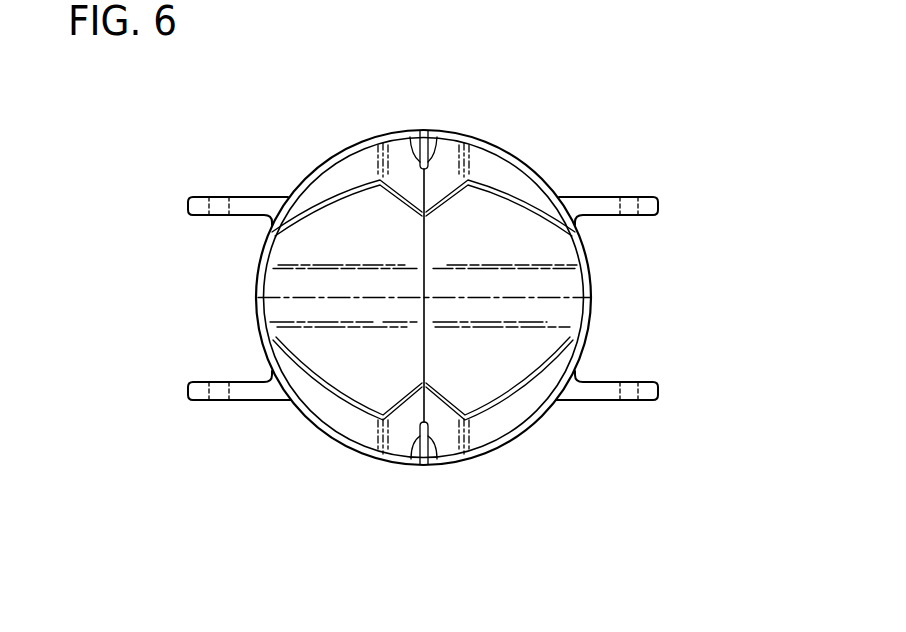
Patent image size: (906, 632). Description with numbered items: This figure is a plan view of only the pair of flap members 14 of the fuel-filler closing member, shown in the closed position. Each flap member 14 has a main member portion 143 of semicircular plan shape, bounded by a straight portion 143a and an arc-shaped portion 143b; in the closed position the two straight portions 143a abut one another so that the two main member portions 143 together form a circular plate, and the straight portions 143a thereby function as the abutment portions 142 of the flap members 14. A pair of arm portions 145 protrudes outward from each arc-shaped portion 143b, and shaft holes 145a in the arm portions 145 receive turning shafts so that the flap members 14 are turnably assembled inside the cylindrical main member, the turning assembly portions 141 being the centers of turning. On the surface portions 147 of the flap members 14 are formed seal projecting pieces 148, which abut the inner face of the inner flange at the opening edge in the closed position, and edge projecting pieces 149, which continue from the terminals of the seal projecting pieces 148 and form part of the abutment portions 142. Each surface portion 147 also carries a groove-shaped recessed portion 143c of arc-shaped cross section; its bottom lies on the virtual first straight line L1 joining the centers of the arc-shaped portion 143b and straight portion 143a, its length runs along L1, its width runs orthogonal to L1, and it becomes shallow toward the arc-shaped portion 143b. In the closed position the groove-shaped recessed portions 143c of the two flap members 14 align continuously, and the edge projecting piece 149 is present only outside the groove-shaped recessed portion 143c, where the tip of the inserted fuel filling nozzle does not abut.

The flap member 14 is at (347, 277).
The turning assembly portion 141 is at (642, 168).
The abutment portion 142 is at (426, 345).
The main member portion 143 is at (463, 192).
The straight portion 143a is at (423, 279).
The arc-shaped portion 143b is at (258, 300).
The groove-shaped recessed portion 143c is at (362, 202).
The arm portion 145 is at (188, 206).
The shaft hole 145a is at (213, 197).
The surface portion 147 is at (343, 368).
The seal projecting piece 148 is at (363, 455).
The edge projecting piece 149 is at (433, 132).
The virtual first straight line L1 is at (547, 297).